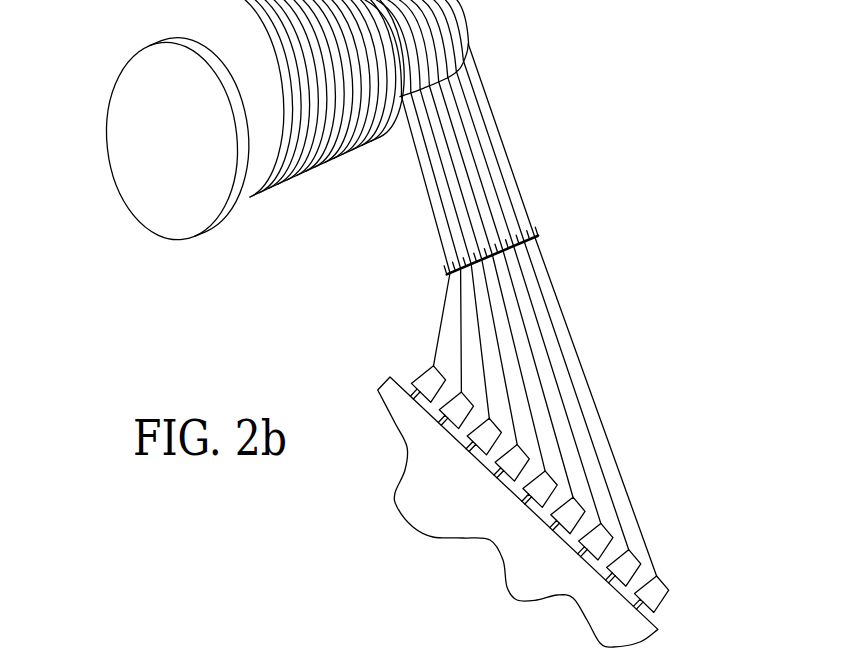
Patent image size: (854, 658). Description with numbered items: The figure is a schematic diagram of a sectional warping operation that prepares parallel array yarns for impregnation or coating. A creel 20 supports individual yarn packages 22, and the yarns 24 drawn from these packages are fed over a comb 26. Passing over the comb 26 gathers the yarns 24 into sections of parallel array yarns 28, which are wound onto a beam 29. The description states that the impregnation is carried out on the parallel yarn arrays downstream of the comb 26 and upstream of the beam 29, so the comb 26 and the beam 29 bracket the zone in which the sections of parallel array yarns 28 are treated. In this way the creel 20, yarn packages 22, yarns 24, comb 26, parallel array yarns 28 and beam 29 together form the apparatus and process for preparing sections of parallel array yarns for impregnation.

The creel 20 is at (415, 530).
The yarn packages 22 is at (664, 597).
The yarns 24 is at (590, 388).
The comb 26 is at (540, 233).
The sections of parallel array yarns 28 is at (282, 181).
The beam 29 is at (125, 173).